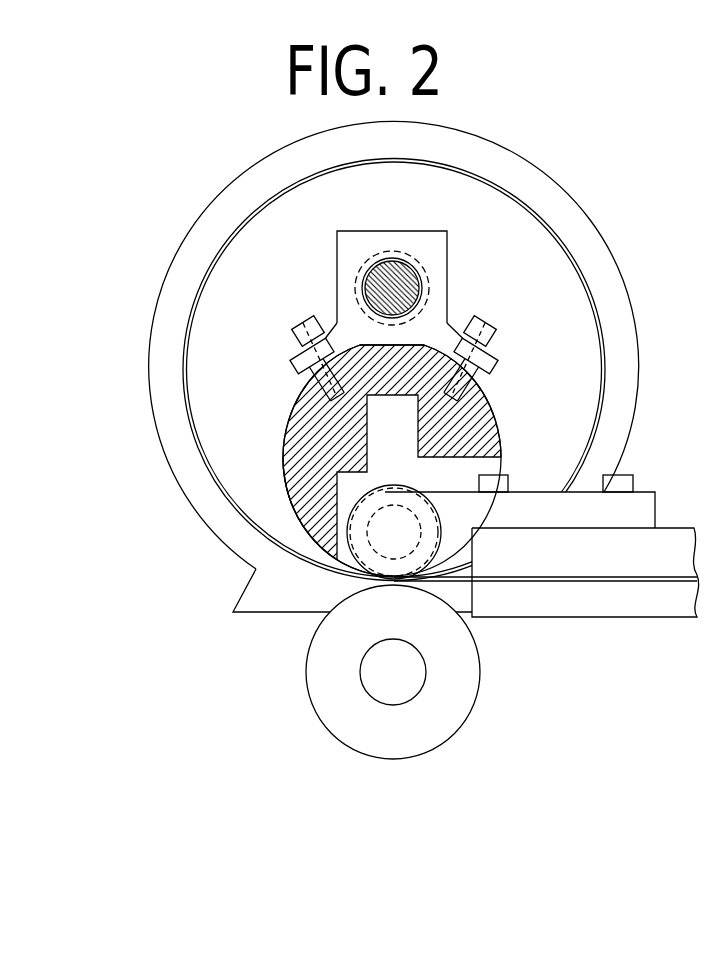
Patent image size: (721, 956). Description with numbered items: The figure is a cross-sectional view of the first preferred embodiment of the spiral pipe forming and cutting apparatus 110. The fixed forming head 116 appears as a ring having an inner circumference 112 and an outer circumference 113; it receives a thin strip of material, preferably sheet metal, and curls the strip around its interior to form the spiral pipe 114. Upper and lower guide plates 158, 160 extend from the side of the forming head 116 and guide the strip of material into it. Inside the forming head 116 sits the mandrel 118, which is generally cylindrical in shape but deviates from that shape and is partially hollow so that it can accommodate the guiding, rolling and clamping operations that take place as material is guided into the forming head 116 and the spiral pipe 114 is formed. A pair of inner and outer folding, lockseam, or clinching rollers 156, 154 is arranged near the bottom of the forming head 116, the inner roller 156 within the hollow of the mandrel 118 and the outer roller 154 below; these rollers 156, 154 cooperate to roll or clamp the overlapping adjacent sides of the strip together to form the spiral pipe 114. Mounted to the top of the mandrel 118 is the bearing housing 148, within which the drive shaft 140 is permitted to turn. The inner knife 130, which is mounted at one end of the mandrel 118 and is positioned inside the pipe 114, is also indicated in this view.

The spiral pipe forming and cutting apparatus 110 is at (257, 145).
The inner circumference 112 is at (563, 230).
The outer circumference 113 is at (556, 168).
The spiral pipe 114 is at (597, 318).
The forming head 116 is at (600, 274).
The mandrel 118 is at (467, 422).
The inner knife 130 is at (313, 538).
The drive shaft 140 is at (388, 270).
The bearing housing 148 is at (437, 265).
The outer folding, lockseam, or clinching roller 154 is at (455, 690).
The inner folding, lockseam, or clinching roller 156 is at (387, 487).
The upper guide plate 158 is at (670, 542).
The lower guide plate 160 is at (622, 602).